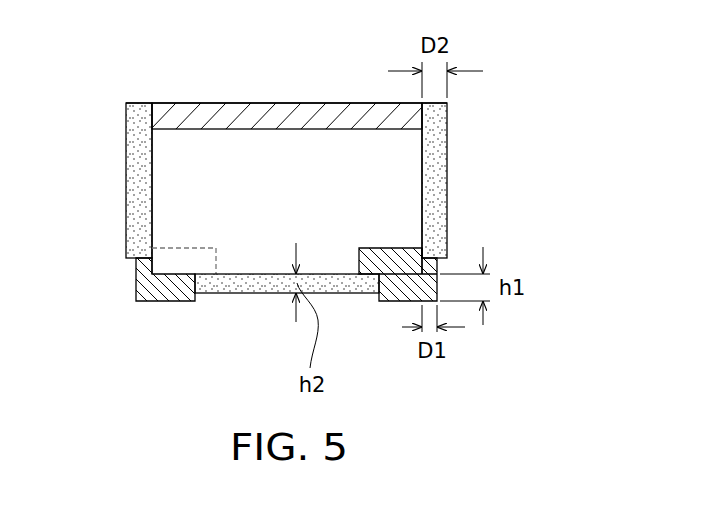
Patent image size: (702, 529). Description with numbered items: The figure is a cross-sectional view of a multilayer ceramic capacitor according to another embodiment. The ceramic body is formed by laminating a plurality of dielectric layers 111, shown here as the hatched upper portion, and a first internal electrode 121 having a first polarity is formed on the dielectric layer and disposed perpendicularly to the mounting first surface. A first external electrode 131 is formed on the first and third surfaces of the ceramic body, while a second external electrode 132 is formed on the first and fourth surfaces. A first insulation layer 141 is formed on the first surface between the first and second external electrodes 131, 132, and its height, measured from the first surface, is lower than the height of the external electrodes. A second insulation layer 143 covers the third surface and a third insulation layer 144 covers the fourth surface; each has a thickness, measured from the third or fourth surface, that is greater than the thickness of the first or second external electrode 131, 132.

The dielectric layer 111 is at (335, 110).
The first internal electrode 121 is at (213, 145).
The first external electrode 131 is at (153, 290).
The second external electrode 132 is at (395, 297).
The first insulation layer 141 is at (238, 285).
The second insulation layer 143 is at (139, 181).
The third insulation layer 144 is at (436, 172).